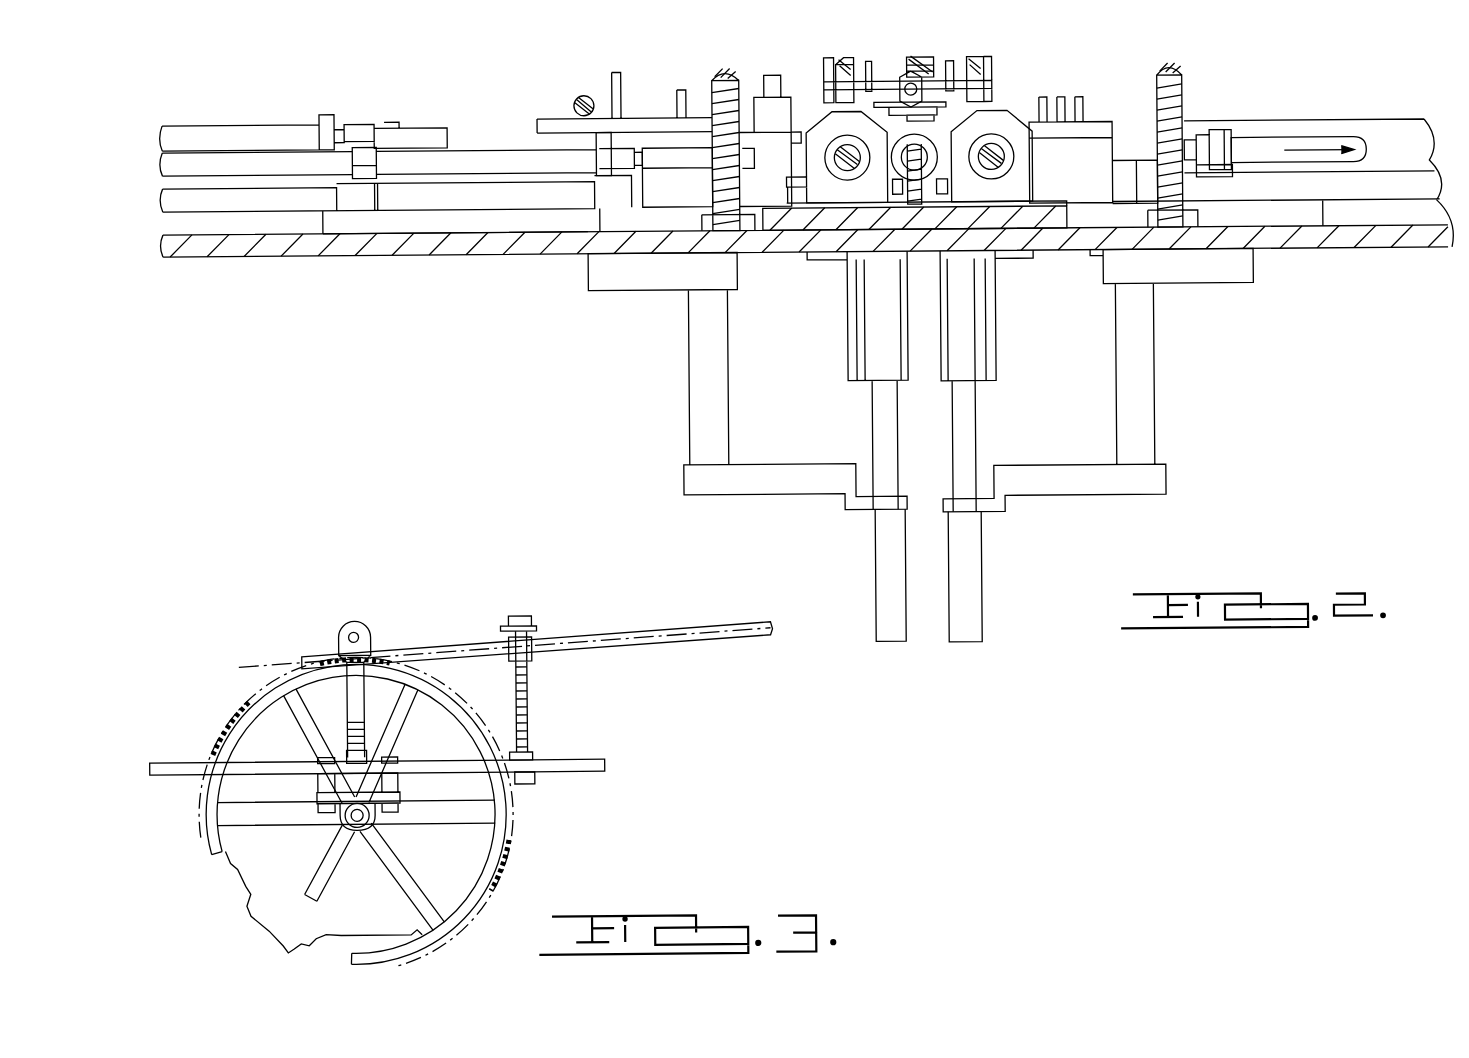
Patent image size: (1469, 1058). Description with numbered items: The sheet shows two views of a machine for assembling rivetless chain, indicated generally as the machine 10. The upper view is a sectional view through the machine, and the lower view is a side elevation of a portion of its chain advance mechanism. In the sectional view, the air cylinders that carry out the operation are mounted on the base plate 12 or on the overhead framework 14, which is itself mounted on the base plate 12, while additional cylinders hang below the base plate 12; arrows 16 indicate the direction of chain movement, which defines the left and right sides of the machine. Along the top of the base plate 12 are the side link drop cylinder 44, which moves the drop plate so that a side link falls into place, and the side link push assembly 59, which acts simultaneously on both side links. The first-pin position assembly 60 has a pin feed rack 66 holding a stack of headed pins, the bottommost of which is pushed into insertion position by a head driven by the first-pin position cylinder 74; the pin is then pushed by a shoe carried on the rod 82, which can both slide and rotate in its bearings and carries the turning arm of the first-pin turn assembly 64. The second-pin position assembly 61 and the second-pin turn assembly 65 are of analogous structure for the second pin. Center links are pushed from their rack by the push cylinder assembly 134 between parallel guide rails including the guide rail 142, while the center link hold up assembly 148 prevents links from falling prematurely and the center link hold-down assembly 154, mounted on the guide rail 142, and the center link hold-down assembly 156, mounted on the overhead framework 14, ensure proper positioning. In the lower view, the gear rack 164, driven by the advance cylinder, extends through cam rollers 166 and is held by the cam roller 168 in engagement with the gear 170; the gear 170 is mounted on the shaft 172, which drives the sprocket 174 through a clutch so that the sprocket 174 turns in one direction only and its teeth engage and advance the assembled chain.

In FIG. 2, the machine for assembling rivetless chain 10 is at (570, 325).
In FIG. 2, the base plate 12 is at (303, 254).
In FIG. 2, the overhead framework 14 is at (1188, 93).
In FIG. 2, the arrows indicating direction of chain movement 16 is at (1345, 143).
In FIG. 2, the side link drop cylinder 44 is at (905, 80).
In FIG. 2, the side link push assembly 59 is at (276, 123).
In FIG. 2, the pin 1 position assembly 60 is at (1300, 146).
In FIG. 2, the pin 2 position assembly 61 is at (465, 147).
In FIG. 2, the pin 1 turn assembly 64 is at (980, 420).
In FIG. 2, the pin 2 turn assembly 65 is at (870, 417).
In FIG. 2, the pin feed rack 66 is at (1090, 124).
In FIG. 2, the pin 1 position cylinder 74 is at (1280, 148).
In FIG. 2, the rod 82 is at (1010, 160).
In FIG. 2, the push cylinder assembly 134 is at (205, 147).
In FIG. 2, the guide rail 142 is at (667, 198).
In FIG. 2, the center link hold up assembly 148 is at (576, 101).
In FIG. 2, the center link hold-down assembly 154 is at (752, 80).
In FIG. 2, the center link hold-down assembly 156 is at (942, 77).
In FIG. 3, the gear rack 164 is at (678, 629).
In FIG. 3, the cam rollers 166 is at (535, 635).
In FIG. 3, the cam roller 168 is at (365, 628).
In FIG. 3, the gear 170 is at (228, 728).
In FIG. 3, the shaft 172 is at (365, 815).
In FIG. 3, the sprocket 174 is at (260, 858).